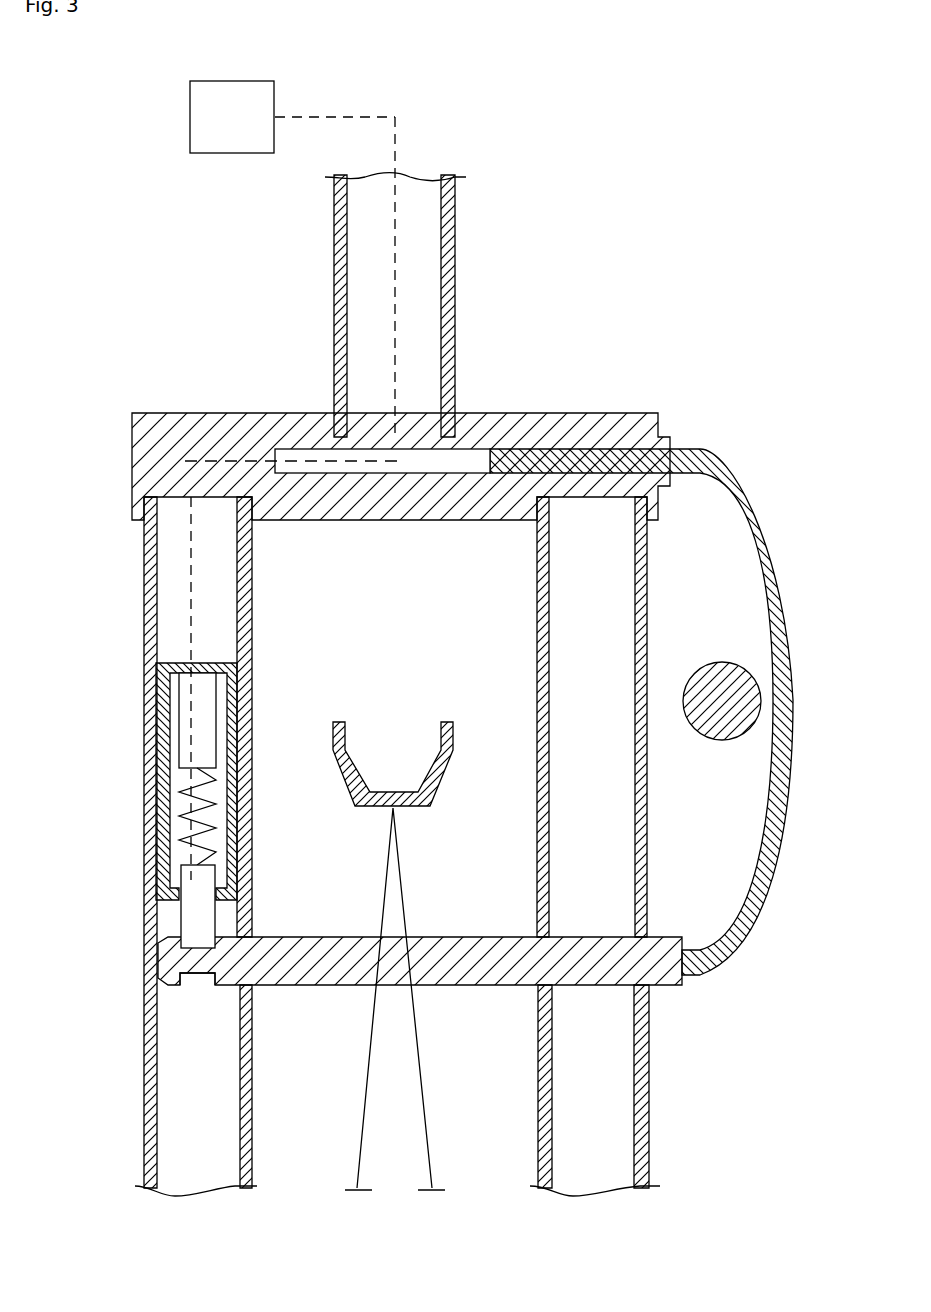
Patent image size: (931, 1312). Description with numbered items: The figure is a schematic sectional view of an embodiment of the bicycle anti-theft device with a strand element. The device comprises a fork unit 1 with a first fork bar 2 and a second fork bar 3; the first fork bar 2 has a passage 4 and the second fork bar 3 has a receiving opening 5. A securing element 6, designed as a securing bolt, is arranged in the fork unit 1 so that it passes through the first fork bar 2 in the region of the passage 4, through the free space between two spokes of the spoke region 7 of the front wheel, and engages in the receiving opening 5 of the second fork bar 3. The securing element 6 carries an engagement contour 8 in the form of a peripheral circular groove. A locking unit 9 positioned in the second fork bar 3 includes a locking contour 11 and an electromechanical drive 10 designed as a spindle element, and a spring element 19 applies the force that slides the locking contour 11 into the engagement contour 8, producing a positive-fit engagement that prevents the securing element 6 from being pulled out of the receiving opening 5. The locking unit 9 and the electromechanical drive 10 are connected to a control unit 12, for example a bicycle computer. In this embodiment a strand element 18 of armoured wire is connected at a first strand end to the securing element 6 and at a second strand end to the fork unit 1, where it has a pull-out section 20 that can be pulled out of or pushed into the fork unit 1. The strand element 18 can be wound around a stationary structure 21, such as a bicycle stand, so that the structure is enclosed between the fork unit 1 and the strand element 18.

The fork unit 1 is at (493, 402).
The first fork bar 2 is at (648, 588).
The second fork bar 3 is at (148, 572).
The passage 4 is at (647, 925).
The receiving opening 5 is at (244, 988).
The securing element 6 is at (663, 965).
The spoke region 7 is at (395, 1043).
The engagement contour 8 is at (197, 975).
The locking unit 9 is at (163, 682).
The electromechanical drive 10 is at (192, 726).
The locking contour 11 is at (195, 915).
The control unit 12 is at (232, 116).
The strand element 18 is at (725, 453).
The spring element 19 is at (200, 818).
The pull-out section 20 is at (595, 452).
The stationary structure 21 is at (705, 716).